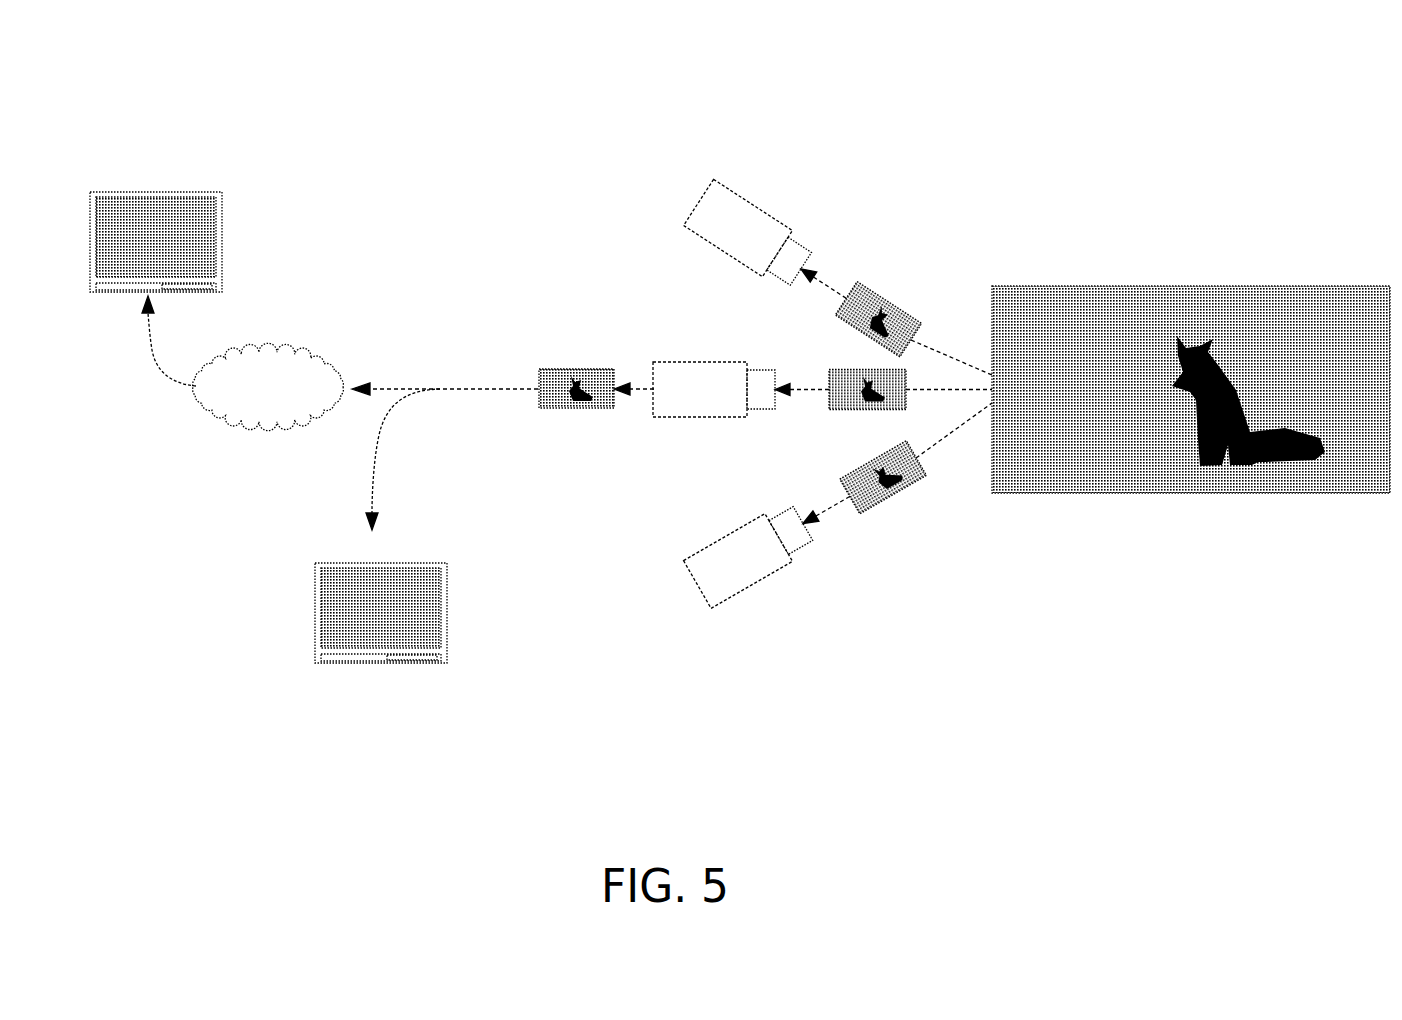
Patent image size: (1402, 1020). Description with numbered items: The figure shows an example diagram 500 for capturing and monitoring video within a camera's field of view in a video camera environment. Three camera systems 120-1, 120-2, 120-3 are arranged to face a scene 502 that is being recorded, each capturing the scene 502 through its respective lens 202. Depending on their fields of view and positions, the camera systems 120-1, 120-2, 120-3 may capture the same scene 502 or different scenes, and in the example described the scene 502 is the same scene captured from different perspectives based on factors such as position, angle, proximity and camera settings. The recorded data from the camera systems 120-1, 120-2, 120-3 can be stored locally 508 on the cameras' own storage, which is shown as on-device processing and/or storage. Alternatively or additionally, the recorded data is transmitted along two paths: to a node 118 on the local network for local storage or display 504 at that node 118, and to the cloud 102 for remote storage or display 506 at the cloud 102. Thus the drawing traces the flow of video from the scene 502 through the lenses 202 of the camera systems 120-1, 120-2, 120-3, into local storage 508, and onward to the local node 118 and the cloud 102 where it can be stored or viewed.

The example diagram 500 is at (1066, 52).
The remote storage or display 506 is at (155, 211).
The cloud 102 is at (268, 395).
The local storage 508 is at (578, 372).
The camera system 120-1 is at (838, 272).
The camera system 120-2 is at (822, 381).
The camera system 120-3 is at (836, 505).
The lens 202 is at (752, 412).
The scene 502 is at (1198, 285).
The local storage or display 504 is at (348, 646).
The node 118 is at (314, 581).